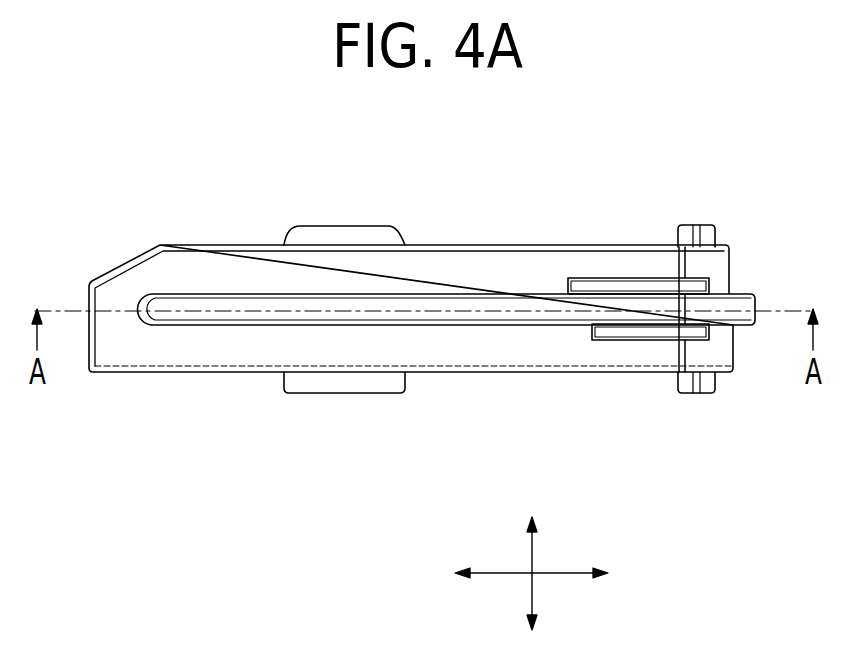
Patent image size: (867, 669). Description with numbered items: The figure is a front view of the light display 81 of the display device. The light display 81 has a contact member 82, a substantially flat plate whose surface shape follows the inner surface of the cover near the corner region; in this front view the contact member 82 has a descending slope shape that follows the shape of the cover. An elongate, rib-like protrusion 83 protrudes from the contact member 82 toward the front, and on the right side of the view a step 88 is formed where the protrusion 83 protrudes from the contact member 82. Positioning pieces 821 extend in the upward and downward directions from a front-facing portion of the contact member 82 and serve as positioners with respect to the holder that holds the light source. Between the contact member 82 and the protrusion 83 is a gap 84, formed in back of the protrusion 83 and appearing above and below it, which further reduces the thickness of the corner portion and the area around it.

The light display 81 is at (180, 228).
The contact member 82 is at (493, 267).
The positioning pieces 821 is at (350, 230).
The protrusion 83 is at (468, 312).
The gap 84 is at (632, 287).
The step 88 is at (740, 290).